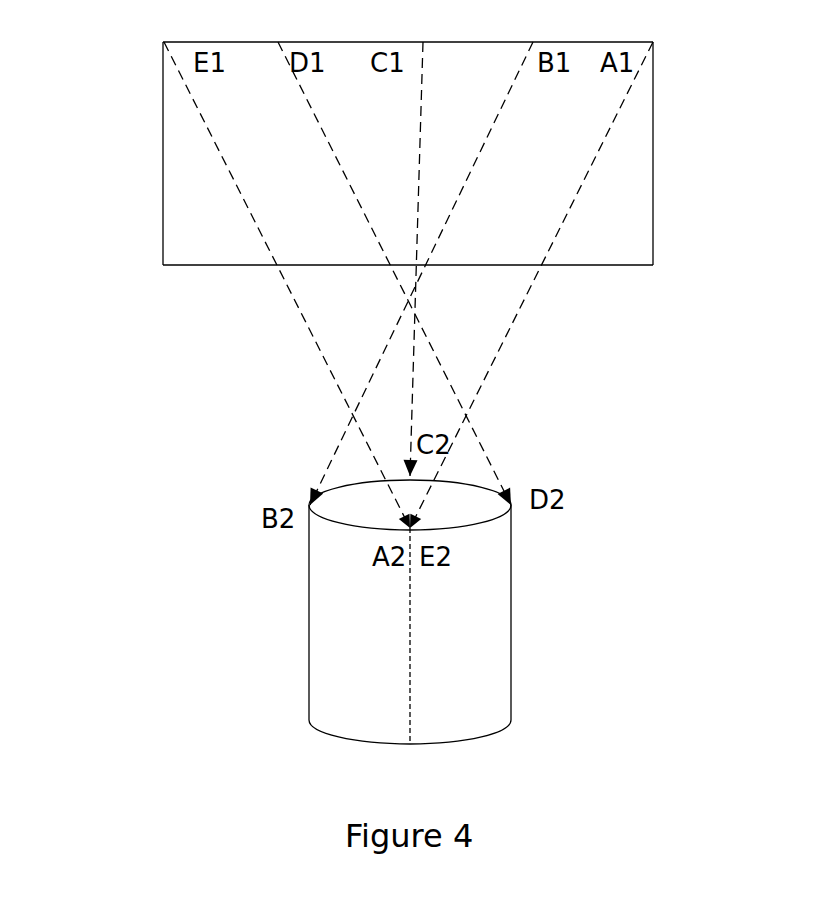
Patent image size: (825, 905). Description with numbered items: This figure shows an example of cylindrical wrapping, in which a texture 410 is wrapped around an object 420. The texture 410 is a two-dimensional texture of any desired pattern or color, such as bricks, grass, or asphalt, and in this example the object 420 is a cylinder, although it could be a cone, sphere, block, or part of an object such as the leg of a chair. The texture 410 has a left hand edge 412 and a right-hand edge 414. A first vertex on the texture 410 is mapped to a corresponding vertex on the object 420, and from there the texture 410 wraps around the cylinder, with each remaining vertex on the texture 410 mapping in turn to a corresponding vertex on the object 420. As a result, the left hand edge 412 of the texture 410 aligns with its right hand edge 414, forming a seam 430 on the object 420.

The texture 410 is at (408, 153).
The left hand edge 412 is at (162, 153).
The right-hand edge 414 is at (654, 117).
The object 420 is at (410, 612).
The seam 430 is at (407, 700).